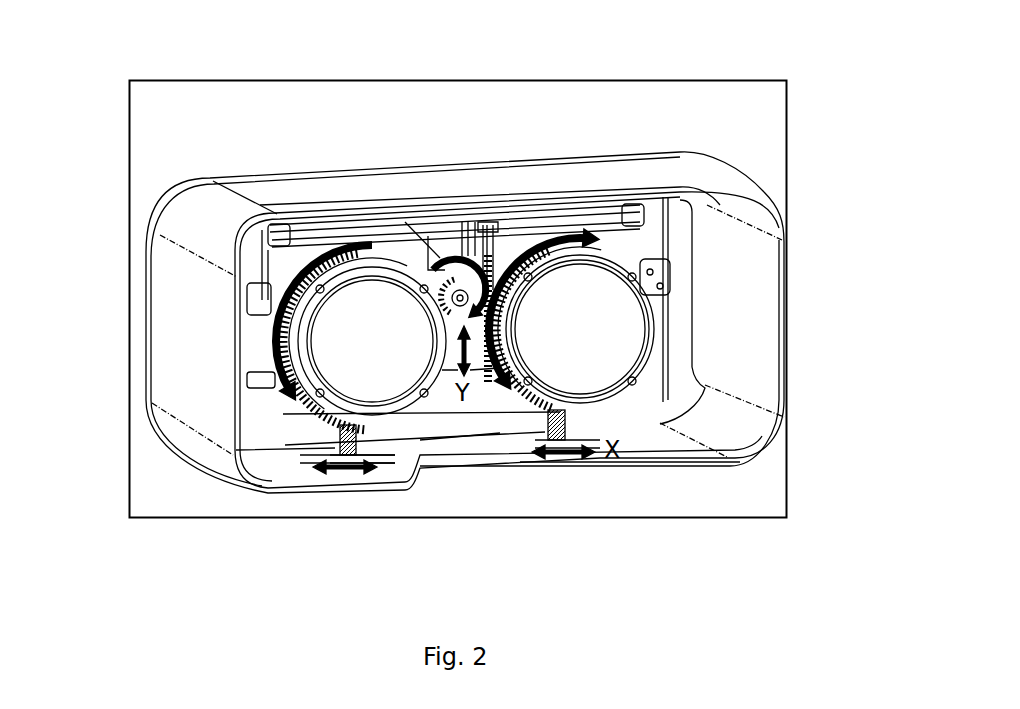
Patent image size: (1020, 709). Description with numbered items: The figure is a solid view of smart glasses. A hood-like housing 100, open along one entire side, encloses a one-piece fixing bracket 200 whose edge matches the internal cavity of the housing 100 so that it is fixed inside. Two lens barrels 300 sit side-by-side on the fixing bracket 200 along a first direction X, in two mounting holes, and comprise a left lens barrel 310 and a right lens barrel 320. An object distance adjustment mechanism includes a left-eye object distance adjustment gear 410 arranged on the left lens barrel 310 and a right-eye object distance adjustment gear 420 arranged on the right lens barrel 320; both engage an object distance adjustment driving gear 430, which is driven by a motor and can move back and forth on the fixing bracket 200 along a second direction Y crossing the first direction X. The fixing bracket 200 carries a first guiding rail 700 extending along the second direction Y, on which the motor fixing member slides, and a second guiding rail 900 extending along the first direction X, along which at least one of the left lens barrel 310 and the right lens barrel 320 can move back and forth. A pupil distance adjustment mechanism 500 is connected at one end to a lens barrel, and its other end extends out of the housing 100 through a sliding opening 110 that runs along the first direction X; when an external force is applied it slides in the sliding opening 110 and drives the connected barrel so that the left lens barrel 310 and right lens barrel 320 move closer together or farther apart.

The housing 100 is at (225, 220).
The sliding opening 110 is at (345, 447).
The fixing bracket 200 is at (656, 254).
The lens barrels 300 is at (488, 476).
The left lens barrel 310 is at (397, 343).
The right lens barrel 320 is at (575, 362).
The left-eye object distance adjustment gear 410 is at (297, 293).
The right-eye object distance adjustment gear 420 is at (505, 262).
The object distance adjustment driving gear 430 is at (453, 287).
The pupil distance adjustment mechanism 500 is at (348, 430).
The first guiding rail 700 is at (438, 246).
The second guiding rail 900 is at (462, 220).